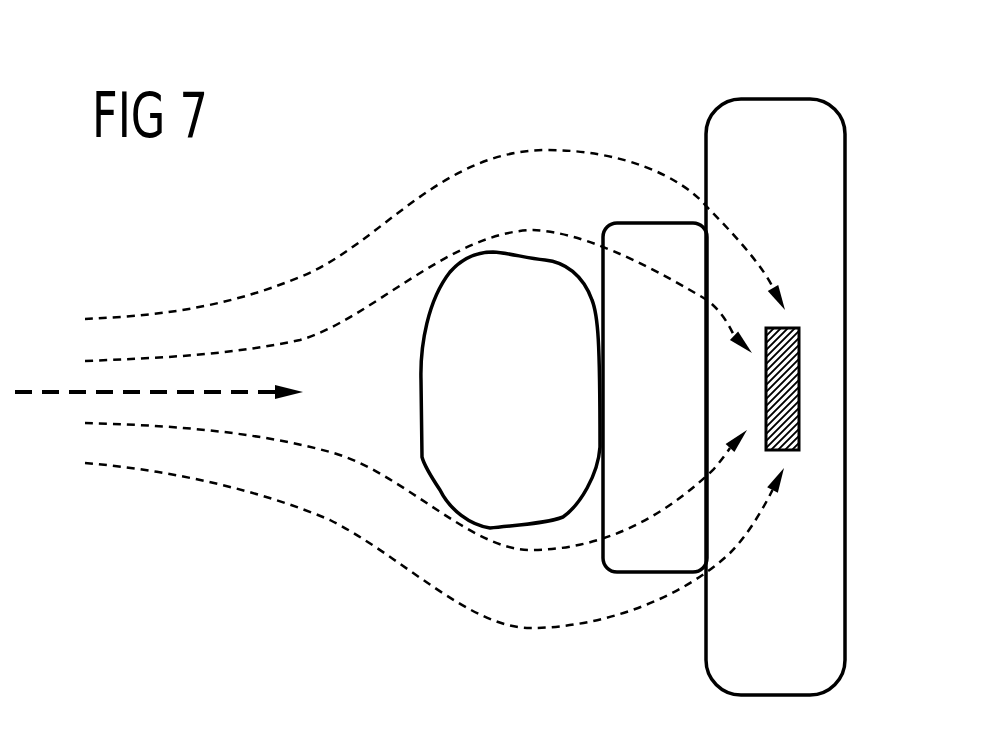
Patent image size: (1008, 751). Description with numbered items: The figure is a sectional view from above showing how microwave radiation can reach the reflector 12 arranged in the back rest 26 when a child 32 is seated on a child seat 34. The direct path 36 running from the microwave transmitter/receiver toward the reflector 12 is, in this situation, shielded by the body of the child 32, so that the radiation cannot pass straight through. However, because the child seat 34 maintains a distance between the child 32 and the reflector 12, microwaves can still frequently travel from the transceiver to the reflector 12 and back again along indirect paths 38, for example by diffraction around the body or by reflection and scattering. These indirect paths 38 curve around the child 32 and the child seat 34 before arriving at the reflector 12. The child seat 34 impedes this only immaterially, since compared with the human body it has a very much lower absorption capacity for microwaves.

The reflector 12 is at (787, 417).
The back rest 26 is at (832, 630).
The child 32 is at (425, 408).
The child seat 34 is at (608, 560).
The direct path 36 is at (55, 392).
The indirect paths 38 is at (203, 475).